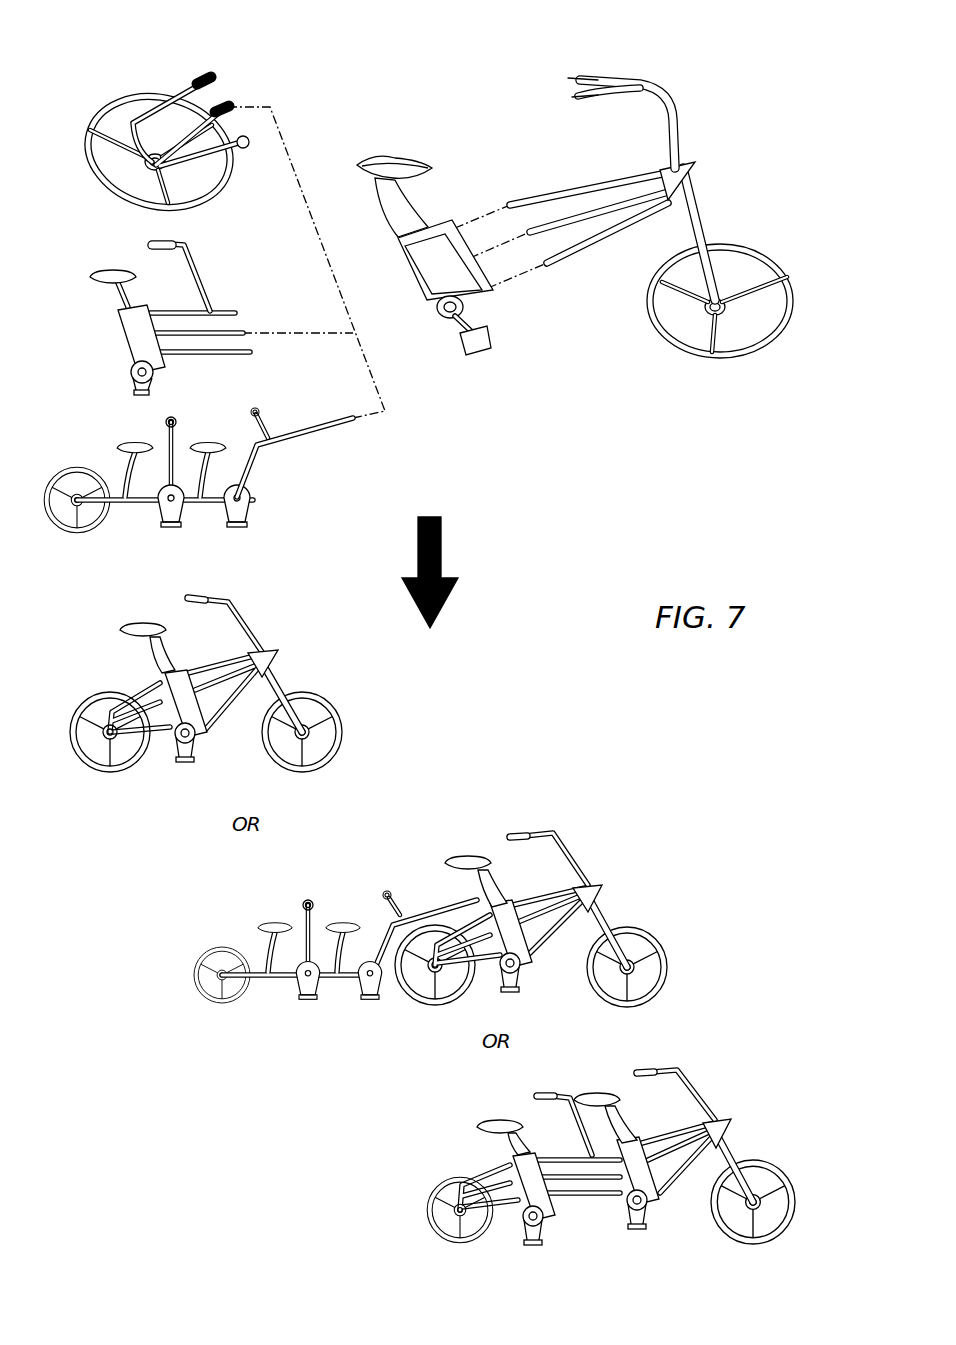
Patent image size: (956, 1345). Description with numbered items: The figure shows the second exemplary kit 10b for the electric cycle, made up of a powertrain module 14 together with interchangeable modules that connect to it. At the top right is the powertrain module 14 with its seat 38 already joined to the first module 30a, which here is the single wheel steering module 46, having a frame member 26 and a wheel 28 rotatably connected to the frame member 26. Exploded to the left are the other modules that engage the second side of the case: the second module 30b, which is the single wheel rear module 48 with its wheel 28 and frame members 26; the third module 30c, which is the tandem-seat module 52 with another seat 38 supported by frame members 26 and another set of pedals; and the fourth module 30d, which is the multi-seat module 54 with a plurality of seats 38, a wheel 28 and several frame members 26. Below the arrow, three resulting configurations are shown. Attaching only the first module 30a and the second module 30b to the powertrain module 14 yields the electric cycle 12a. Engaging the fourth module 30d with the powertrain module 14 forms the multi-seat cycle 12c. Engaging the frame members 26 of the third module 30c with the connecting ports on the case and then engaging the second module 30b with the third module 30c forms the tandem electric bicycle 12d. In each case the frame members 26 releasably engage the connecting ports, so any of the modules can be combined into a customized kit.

The kit 10b is at (783, 82).
The electric cycle 12a is at (266, 600).
The multi-seat cycle 12c is at (372, 852).
The tandem electric bicycle 12d is at (468, 1084).
The powertrain module 14 is at (393, 158).
The frame member 26 is at (172, 95).
The wheel 28 is at (112, 188).
The first module 30a is at (660, 75).
The second module 30b is at (218, 52).
The third module 30c is at (108, 336).
The fourth module 30d is at (292, 478).
The seat 38 is at (113, 270).
The single wheel steering module 46 is at (696, 168).
The single wheel rear module 48 is at (207, 200).
The tandem-seat module 52 is at (206, 292).
The multi-seat module 54 is at (330, 420).